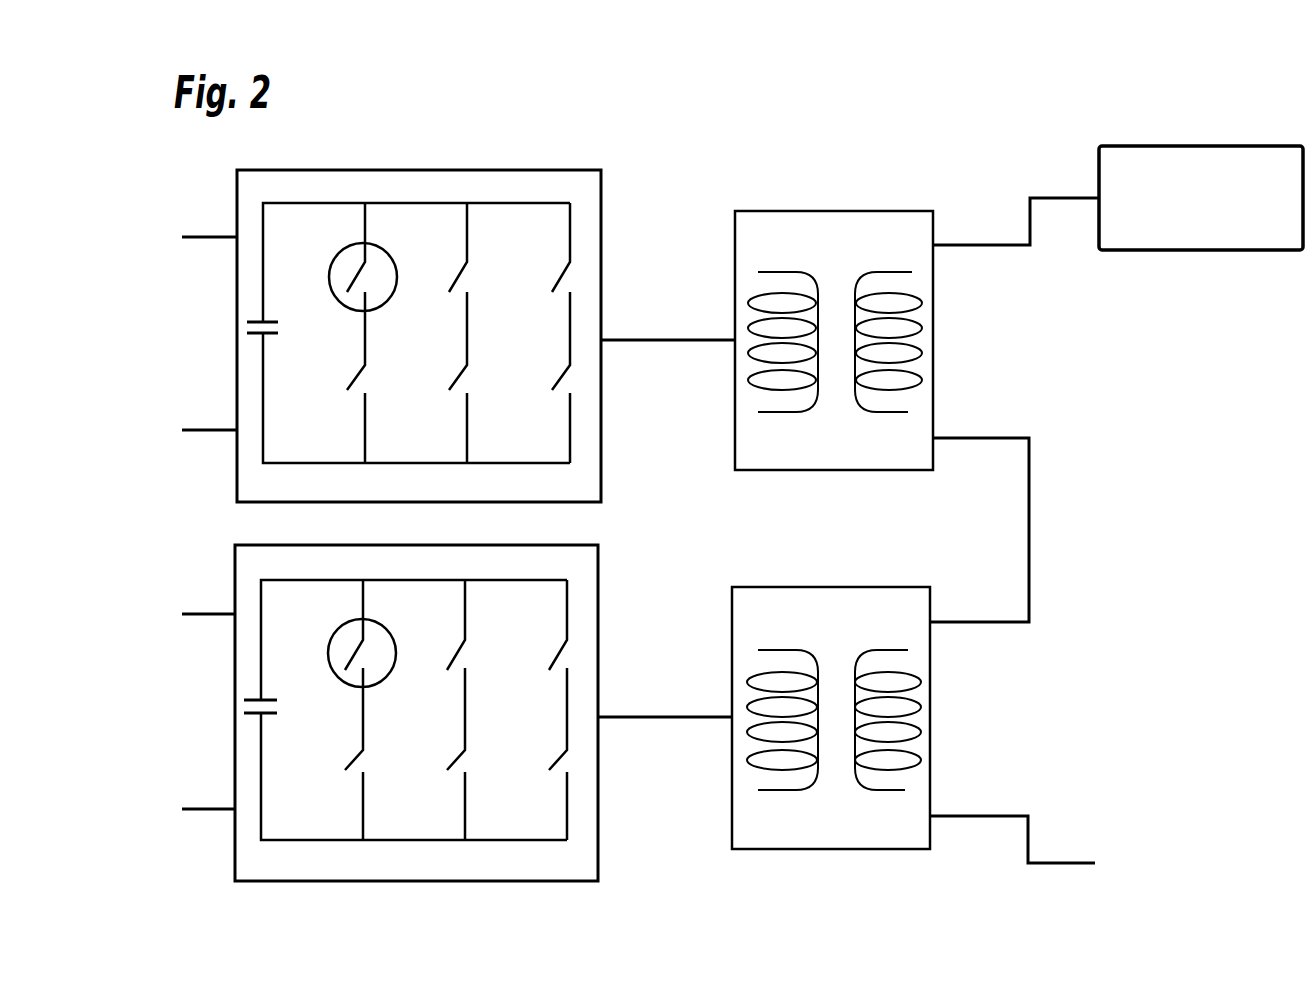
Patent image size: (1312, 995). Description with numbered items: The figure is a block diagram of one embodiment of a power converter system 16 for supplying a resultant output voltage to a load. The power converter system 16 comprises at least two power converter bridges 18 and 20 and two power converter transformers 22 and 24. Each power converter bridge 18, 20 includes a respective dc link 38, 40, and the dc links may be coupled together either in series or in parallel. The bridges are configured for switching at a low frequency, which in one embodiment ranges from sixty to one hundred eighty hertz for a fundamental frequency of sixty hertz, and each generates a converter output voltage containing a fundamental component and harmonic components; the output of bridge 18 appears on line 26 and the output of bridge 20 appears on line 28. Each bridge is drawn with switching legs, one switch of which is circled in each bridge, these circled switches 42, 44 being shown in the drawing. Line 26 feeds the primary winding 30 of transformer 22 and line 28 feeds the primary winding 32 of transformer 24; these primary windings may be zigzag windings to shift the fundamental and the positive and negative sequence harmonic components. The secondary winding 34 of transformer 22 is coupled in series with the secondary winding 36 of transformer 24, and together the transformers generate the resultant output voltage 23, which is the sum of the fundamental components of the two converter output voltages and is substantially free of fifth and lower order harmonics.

The power converter system 16 is at (671, 32).
The power converter bridge 18 is at (498, 170).
The power converter bridge 20 is at (600, 547).
The power converter transformer 22 is at (935, 223).
The resultant output voltage 23 is at (1097, 173).
The power converter transformer 24 is at (932, 703).
The line 26 is at (657, 340).
The line 28 is at (657, 717).
The primary winding 30 is at (782, 268).
The primary winding 32 is at (777, 647).
The secondary winding 34 is at (892, 268).
The secondary winding 36 is at (885, 645).
The dc link 38 is at (253, 322).
The dc link 40 is at (252, 700).
The first converter switch 42 is at (388, 240).
The second converter switch 44 is at (383, 622).